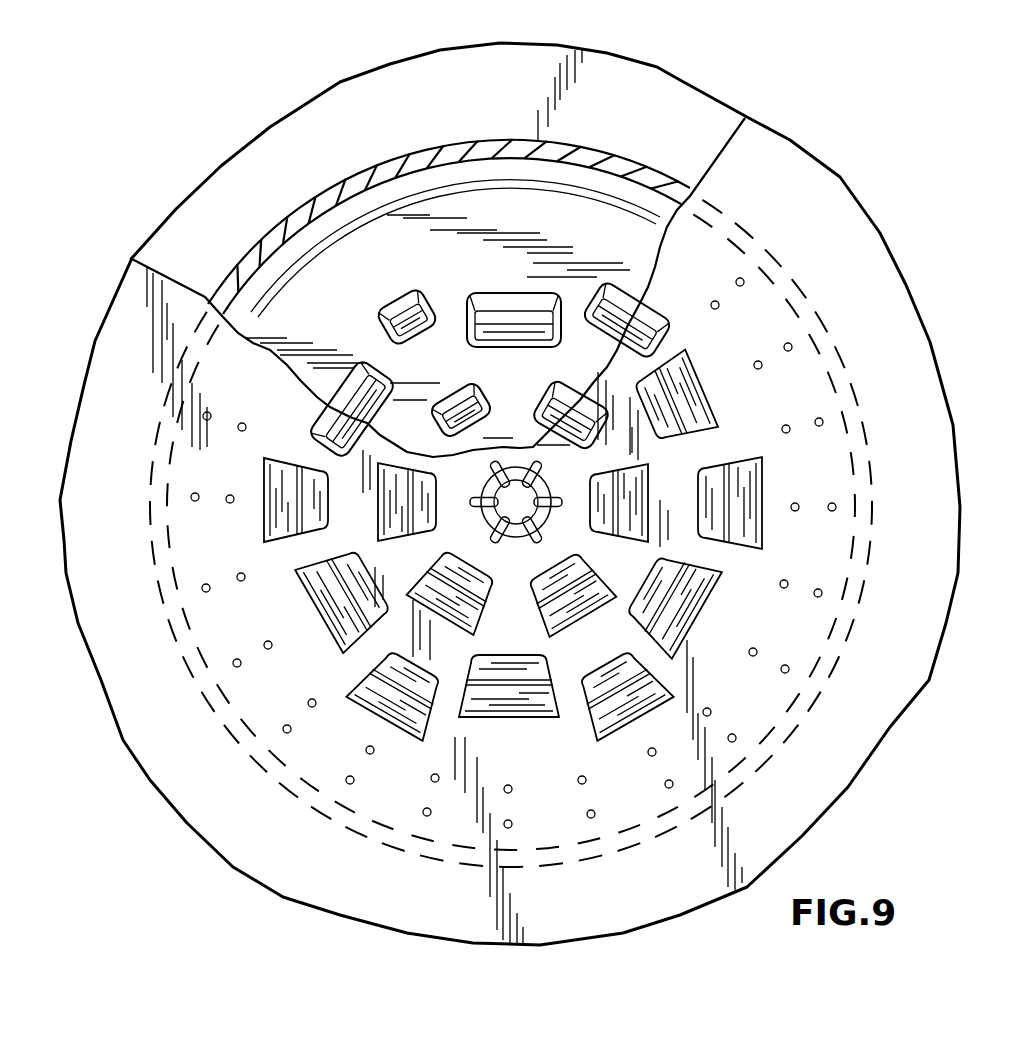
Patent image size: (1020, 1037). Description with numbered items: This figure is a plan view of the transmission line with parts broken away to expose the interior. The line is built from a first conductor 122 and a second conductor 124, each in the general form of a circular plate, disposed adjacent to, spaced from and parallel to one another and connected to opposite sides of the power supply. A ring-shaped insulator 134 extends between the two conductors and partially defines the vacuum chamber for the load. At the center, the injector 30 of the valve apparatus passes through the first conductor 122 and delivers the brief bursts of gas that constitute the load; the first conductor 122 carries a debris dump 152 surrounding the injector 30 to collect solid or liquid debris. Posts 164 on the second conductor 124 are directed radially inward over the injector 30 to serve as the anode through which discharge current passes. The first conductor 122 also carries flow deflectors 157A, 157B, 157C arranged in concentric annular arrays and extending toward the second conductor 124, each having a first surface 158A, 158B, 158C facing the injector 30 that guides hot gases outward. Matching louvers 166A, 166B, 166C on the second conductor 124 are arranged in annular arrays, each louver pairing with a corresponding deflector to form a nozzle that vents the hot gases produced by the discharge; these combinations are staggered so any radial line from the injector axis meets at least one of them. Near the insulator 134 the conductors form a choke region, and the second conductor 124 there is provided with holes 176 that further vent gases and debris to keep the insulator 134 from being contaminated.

The first conductor 122 is at (668, 112).
The second conductor 124 is at (770, 172).
The ring-shaped insulator 134 is at (333, 188).
The injector 30 is at (528, 511).
The debris dump 152 is at (517, 536).
The post 164 is at (486, 517).
The flow deflector 157A is at (460, 396).
The flow deflector 157B is at (522, 303).
The flow deflector 157C is at (408, 302).
The first surface 158A is at (531, 441).
The first surface 158B is at (597, 316).
The first surface 158C is at (433, 332).
The louver 166A is at (495, 596).
The louver 166B is at (392, 655).
The louver 166C is at (412, 733).
The holes 176 is at (816, 420).